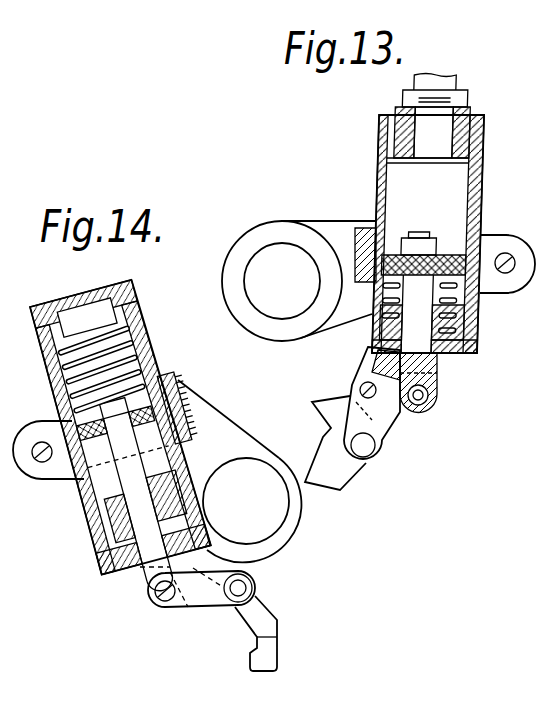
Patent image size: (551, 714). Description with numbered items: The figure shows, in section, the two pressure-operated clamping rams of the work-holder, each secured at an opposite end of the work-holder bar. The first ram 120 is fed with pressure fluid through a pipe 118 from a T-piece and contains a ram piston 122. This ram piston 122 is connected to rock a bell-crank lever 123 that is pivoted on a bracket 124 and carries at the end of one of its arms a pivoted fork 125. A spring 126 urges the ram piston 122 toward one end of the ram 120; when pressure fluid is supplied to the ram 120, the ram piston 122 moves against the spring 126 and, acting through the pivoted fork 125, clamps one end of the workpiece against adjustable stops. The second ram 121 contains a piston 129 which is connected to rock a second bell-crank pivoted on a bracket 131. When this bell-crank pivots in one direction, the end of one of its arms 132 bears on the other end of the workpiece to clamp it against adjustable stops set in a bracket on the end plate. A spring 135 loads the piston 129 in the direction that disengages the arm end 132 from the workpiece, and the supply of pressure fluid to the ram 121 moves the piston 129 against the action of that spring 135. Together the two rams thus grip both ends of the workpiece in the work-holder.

In FIG. 13, the pipe 118 is at (415, 80).
In FIG. 13, the ram 120 is at (378, 176).
In FIG. 13, the ram piston 122 is at (373, 265).
In FIG. 13, the bell-crank lever 123 is at (380, 397).
In FIG. 13, the bracket 124 is at (368, 358).
In FIG. 13, the pivoted fork 125 is at (325, 475).
In FIG. 13, the spring 126 is at (470, 348).
In FIG. 14, the ram 121 is at (146, 353).
In FIG. 14, the piston 129 is at (162, 384).
In FIG. 14, the bracket 131 is at (212, 562).
In FIG. 14, the arm end 132 is at (272, 627).
In FIG. 14, the spring 135 is at (128, 324).